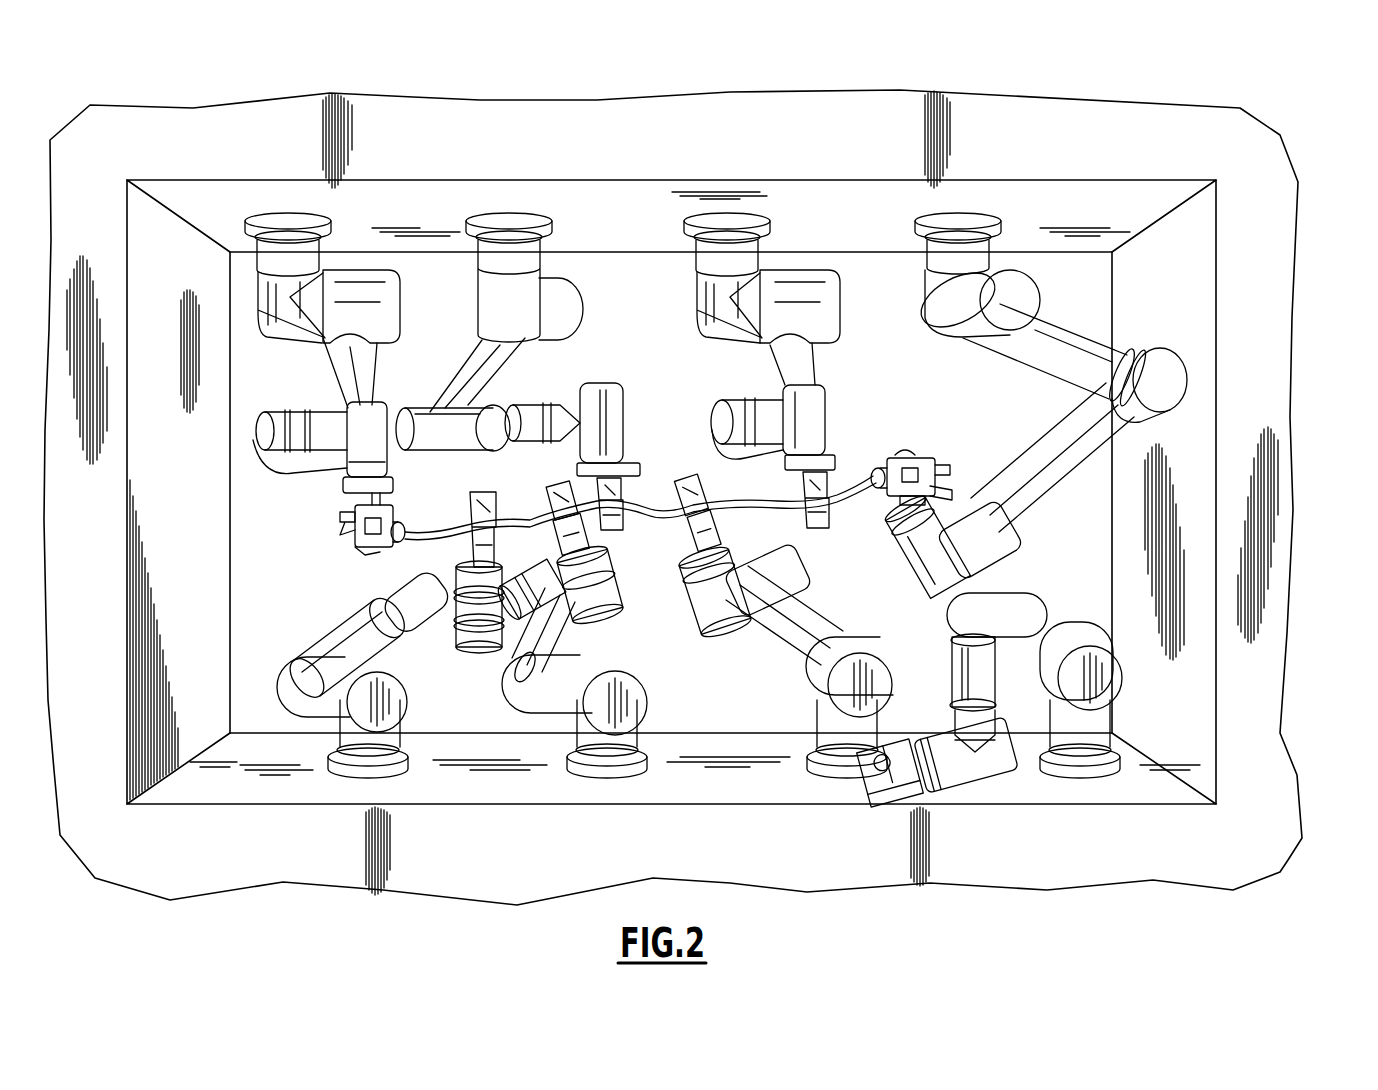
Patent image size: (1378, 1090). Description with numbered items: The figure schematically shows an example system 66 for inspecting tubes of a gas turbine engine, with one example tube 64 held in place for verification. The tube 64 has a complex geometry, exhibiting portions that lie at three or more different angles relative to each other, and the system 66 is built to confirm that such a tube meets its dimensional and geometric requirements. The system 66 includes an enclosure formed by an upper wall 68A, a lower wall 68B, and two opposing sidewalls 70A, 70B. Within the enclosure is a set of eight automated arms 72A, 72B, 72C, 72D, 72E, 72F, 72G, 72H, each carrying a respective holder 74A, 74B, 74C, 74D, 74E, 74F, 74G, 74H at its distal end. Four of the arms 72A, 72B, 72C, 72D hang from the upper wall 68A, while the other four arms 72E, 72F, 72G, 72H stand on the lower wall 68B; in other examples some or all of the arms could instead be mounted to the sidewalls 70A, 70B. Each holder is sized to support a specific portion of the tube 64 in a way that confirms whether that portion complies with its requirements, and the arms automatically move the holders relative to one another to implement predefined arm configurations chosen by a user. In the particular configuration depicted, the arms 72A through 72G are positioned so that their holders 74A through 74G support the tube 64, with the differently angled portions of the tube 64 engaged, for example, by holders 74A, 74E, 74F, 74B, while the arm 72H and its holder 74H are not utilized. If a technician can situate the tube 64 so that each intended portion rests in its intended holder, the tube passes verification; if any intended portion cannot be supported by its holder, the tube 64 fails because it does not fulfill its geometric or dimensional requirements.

The system 66 is at (1285, 100).
The upper wall 68A is at (445, 198).
The lower wall 68B is at (499, 790).
The sidewall 70A is at (178, 477).
The sidewall 70B is at (1158, 662).
The automated arm 72A is at (345, 252).
The automated arm 72B is at (570, 252).
The automated arm 72C is at (803, 252).
The automated arm 72D is at (1010, 252).
The automated arm 72E is at (335, 778).
The automated arm 72F is at (580, 778).
The automated arm 72G is at (820, 778).
The automated arm 72H is at (1052, 778).
The holder 74A is at (345, 545).
The holder 74B is at (580, 487).
The holder 74C is at (825, 532).
The holder 74D is at (915, 455).
The holder 74E is at (462, 540).
The holder 74F is at (592, 535).
The holder 74G is at (692, 470).
The holder 74H is at (888, 800).
The tube 64 is at (538, 528).